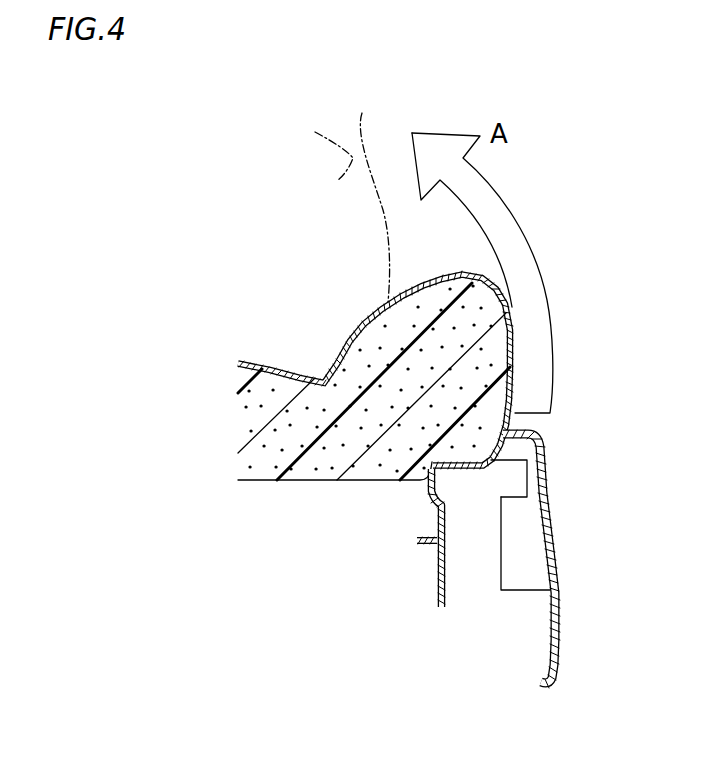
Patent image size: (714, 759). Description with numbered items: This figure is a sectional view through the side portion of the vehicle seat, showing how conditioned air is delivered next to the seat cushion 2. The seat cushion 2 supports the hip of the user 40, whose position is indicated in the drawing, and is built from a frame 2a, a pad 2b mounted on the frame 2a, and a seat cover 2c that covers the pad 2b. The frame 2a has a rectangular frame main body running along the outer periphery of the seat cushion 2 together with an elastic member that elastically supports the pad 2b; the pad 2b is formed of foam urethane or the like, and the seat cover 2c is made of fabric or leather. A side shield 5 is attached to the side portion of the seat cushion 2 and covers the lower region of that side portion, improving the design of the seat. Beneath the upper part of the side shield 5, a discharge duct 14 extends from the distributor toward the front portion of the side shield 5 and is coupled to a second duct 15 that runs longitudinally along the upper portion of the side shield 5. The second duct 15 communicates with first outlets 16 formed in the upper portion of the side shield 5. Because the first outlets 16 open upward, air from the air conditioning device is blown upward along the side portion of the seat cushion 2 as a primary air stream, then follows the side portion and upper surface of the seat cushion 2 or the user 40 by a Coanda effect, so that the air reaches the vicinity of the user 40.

The seat cushion 2 is at (375, 410).
The frame 2a is at (437, 522).
The pad 2b is at (320, 463).
The seat cover 2c is at (342, 337).
The side shield 5 is at (570, 543).
The discharge duct 14 is at (528, 533).
The second duct 15 is at (518, 451).
The first outlets 16 is at (528, 426).
The user 40 is at (352, 194).